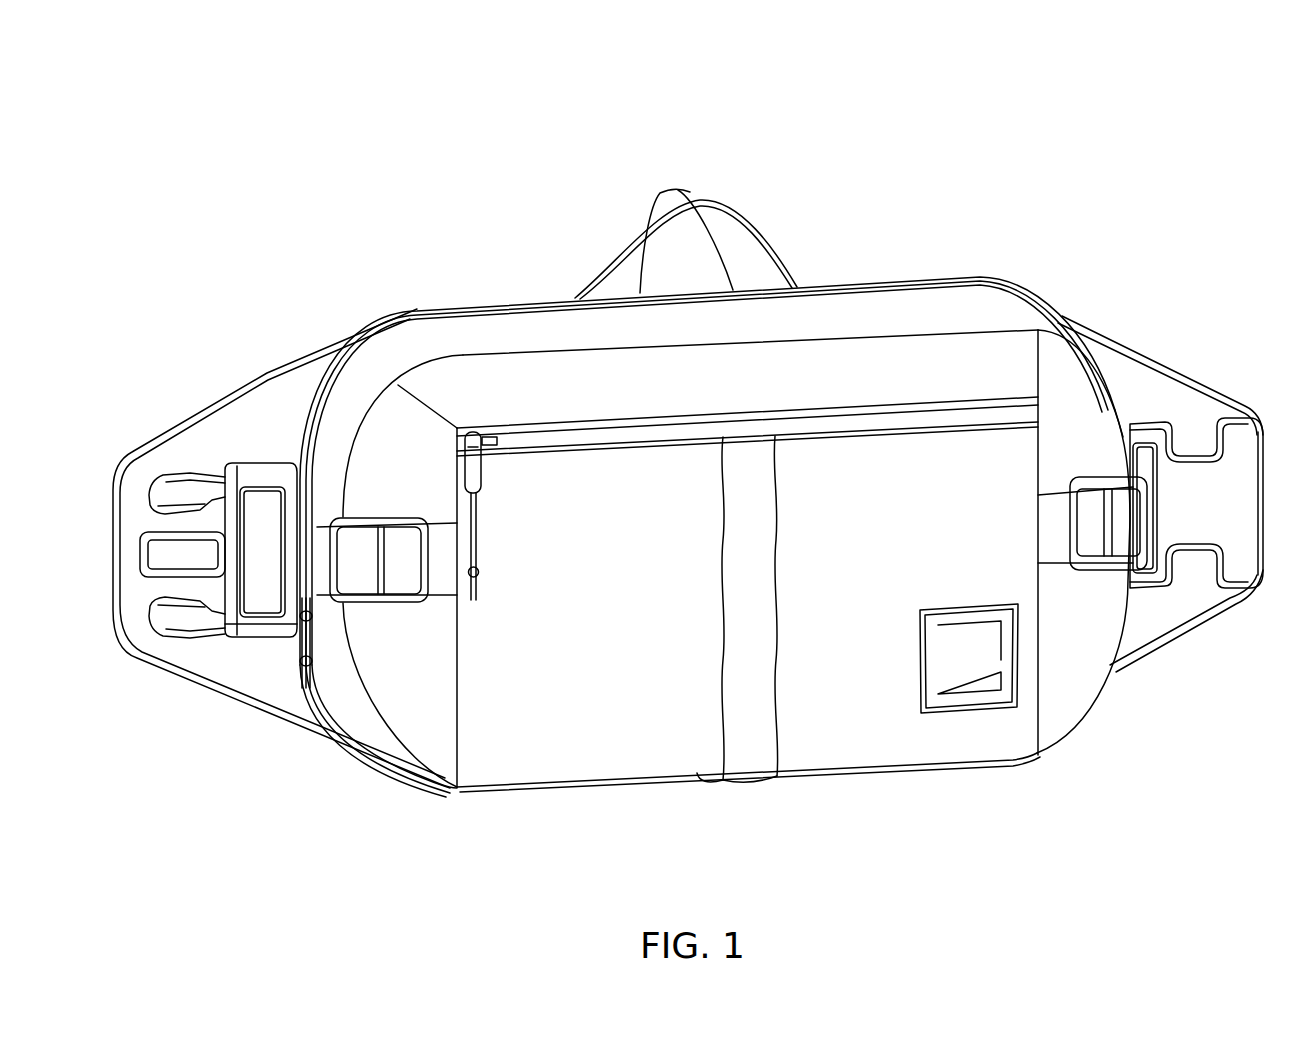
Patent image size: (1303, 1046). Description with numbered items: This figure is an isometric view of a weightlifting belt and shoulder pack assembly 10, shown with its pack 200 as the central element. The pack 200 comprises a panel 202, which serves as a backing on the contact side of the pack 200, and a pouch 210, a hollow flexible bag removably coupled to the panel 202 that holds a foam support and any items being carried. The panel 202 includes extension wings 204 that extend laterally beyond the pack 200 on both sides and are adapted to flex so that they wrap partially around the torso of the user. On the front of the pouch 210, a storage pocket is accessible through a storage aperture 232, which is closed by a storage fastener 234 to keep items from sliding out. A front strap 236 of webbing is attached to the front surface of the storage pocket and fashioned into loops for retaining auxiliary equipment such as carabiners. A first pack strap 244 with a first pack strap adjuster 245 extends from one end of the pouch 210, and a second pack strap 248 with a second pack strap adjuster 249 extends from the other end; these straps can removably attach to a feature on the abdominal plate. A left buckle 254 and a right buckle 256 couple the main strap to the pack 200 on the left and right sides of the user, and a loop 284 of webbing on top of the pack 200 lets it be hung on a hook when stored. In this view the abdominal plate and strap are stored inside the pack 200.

The bag assembly 10 is at (118, 207).
The pack 200 is at (432, 792).
The panel 202 is at (360, 333).
The extension wings 204 is at (210, 690).
The pouch 210 is at (843, 307).
The storage aperture 232 is at (942, 407).
The storage fastener 234 is at (480, 430).
The front strap 236 is at (748, 753).
The first pack strap 244 is at (418, 573).
The first pack strap adjuster 245 is at (1067, 537).
The second pack strap 248 is at (317, 653).
The second pack strap adjuster 249 is at (1113, 567).
The left buckle 254 is at (257, 455).
The right buckle 256 is at (1238, 374).
The loop 284 is at (738, 242).